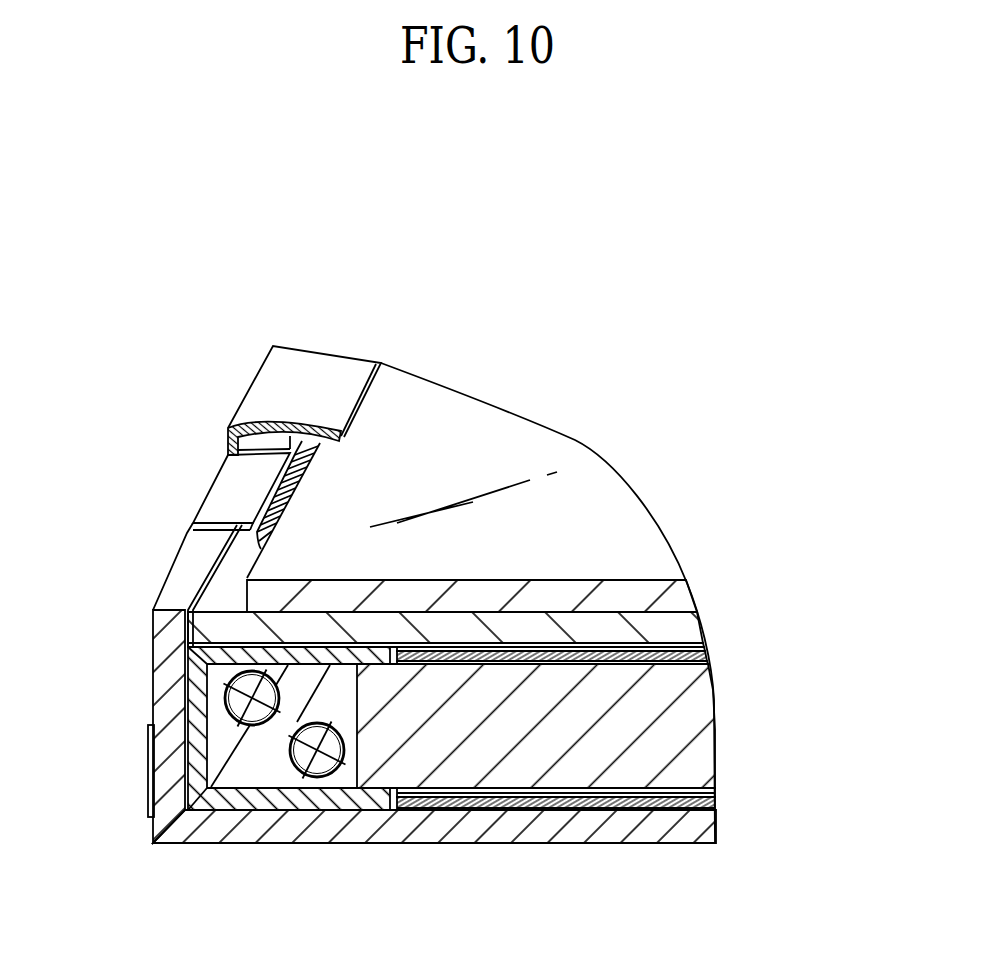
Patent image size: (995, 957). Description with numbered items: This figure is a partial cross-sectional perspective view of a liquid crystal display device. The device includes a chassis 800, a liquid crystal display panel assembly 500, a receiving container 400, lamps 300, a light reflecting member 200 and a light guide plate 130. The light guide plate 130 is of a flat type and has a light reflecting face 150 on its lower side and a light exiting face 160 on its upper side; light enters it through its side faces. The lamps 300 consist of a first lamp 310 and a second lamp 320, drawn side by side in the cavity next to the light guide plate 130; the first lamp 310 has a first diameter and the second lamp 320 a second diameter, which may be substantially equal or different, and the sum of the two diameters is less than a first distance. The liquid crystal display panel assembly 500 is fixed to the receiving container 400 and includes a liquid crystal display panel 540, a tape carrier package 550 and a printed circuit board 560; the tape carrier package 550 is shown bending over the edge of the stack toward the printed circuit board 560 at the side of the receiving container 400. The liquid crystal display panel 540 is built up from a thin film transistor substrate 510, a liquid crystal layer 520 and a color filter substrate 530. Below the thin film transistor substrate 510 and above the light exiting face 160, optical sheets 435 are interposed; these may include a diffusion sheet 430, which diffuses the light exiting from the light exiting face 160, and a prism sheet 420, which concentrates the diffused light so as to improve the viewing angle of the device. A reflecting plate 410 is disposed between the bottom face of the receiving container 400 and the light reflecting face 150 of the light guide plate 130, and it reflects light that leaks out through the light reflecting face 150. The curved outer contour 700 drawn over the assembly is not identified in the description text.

The light guide plate 130 is at (760, 752).
The light reflecting face 150 is at (627, 793).
The light exiting face 160 is at (703, 668).
The light reflecting member 200 is at (108, 773).
The lamps 300 is at (281, 809).
The first lamp 310 is at (252, 702).
The second lamp 320 is at (317, 754).
The receiving container 400 is at (530, 843).
The reflecting plate 410 is at (712, 798).
The prism sheet 420 is at (703, 652).
The diffusion sheet 430 is at (710, 662).
The optical sheets 435 is at (627, 642).
The liquid crystal display panel assembly 500 is at (843, 521).
The thin film transistor substrate 510 is at (681, 633).
The liquid crystal layer 520 is at (679, 594).
The color filter substrate 530 is at (698, 587).
The liquid crystal display panel 540 is at (522, 586).
The tape carrier package 550 is at (228, 493).
The printed circuit board 560 is at (148, 750).
The transparent window cover 700 is at (652, 426).
The chassis 800 is at (268, 393).